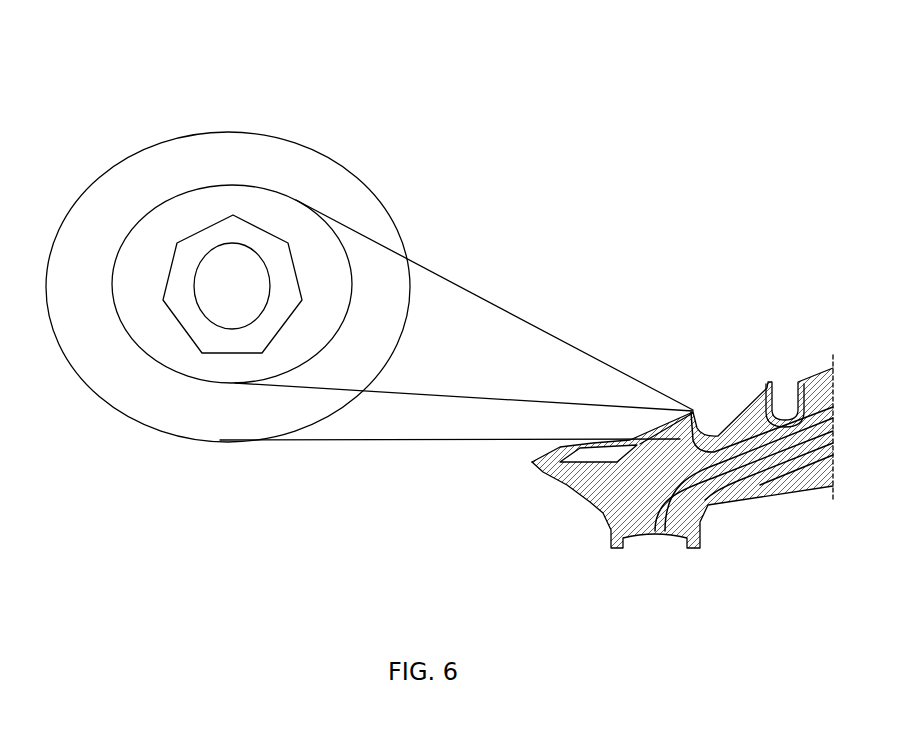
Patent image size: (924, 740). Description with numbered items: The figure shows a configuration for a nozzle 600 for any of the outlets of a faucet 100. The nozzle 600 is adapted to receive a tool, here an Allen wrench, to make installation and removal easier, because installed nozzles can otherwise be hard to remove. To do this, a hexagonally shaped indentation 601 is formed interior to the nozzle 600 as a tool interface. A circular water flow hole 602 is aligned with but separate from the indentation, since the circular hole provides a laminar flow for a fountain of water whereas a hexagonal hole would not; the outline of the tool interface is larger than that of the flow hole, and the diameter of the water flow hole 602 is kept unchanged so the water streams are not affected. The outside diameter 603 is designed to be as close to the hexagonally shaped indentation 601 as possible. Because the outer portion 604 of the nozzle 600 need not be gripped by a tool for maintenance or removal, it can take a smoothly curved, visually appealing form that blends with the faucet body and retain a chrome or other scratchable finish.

The faucet 100 is at (703, 286).
The nozzle 600 is at (264, 55).
The hexagonally shaped indentation 601 is at (194, 229).
The water flow hole 602 is at (210, 305).
The outside diameter 603 is at (247, 184).
The outer portion 604 is at (343, 167).